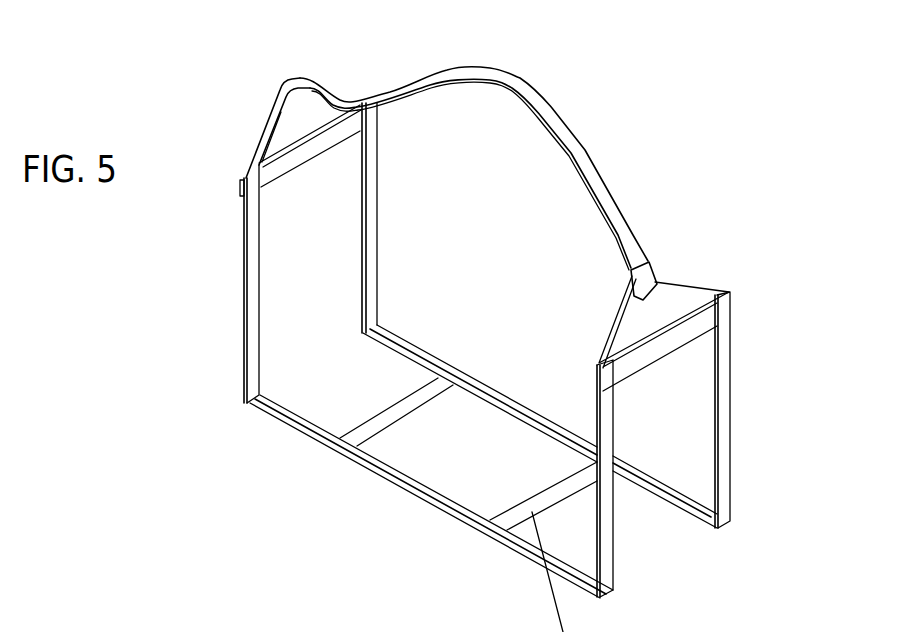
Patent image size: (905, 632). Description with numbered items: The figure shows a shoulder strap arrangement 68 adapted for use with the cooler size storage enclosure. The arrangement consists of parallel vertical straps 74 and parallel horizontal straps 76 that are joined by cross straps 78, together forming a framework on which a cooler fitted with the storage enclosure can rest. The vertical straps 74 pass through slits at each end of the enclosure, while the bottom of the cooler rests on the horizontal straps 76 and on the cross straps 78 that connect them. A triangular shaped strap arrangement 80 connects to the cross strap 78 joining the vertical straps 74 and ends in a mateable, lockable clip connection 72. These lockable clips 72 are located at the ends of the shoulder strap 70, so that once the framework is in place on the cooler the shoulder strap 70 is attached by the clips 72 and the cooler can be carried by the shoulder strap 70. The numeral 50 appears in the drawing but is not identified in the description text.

The cart 50 is at (70, 631).
The shoulder strap arrangement 68 is at (674, 563).
The shoulder strap 70 is at (588, 148).
The mateable, lockable clip connection 72 is at (297, 78).
The vertical straps 74 is at (243, 297).
The horizontal straps 76 is at (433, 354).
The cross straps 78 is at (303, 163).
The triangular shaped strap arrangement 80 is at (266, 118).